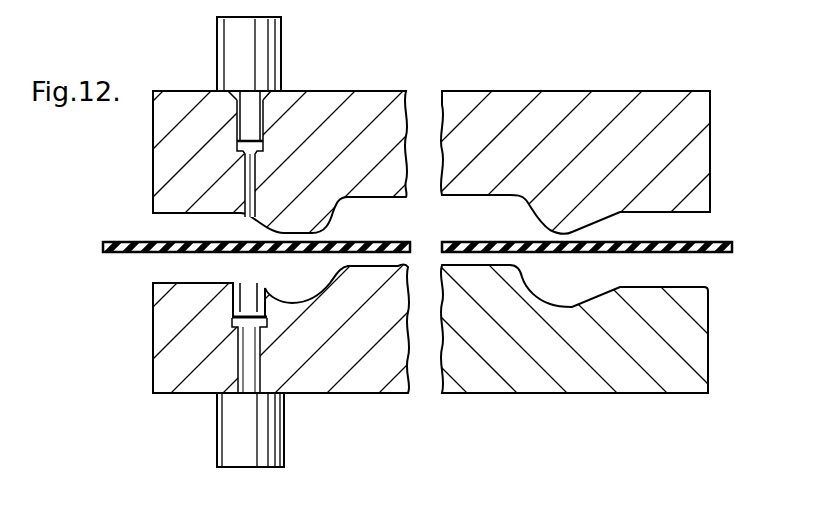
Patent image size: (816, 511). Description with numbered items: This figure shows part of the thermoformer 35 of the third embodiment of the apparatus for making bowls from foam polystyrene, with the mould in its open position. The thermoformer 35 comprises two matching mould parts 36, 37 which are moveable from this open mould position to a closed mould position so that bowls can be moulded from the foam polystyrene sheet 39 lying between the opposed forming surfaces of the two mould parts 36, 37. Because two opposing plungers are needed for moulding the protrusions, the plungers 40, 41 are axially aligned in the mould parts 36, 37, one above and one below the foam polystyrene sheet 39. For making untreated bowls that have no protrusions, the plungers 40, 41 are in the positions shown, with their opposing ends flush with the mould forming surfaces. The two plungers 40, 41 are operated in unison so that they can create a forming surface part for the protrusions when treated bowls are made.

The thermoformer 35 is at (716, 144).
The mould part 36 is at (622, 58).
The mould part 37 is at (568, 393).
The foam polystyrene sheet 39 is at (113, 253).
The plunger 40 is at (262, 163).
The plunger 41 is at (240, 350).